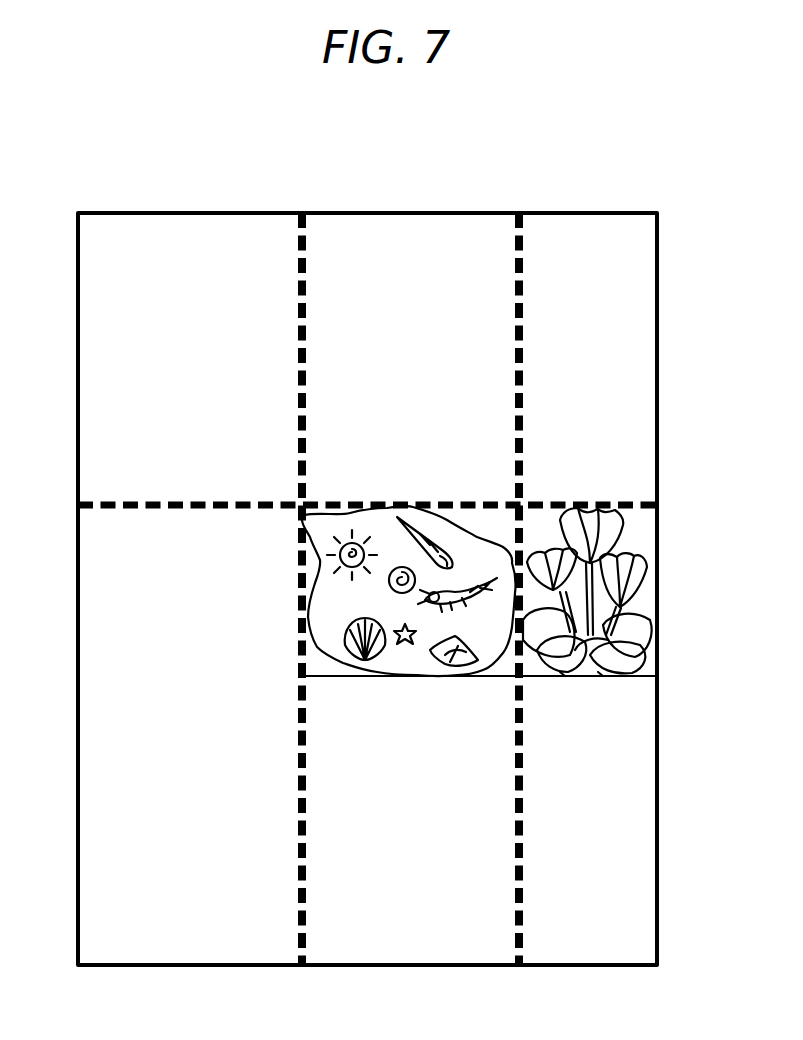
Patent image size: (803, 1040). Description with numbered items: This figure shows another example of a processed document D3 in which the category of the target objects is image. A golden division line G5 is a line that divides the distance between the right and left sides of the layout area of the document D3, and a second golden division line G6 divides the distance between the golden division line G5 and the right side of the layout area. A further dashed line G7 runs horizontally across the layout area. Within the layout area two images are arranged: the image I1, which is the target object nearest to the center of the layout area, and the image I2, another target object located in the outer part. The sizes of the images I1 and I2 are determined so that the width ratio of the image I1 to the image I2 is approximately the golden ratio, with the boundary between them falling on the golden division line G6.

The golden division line G5 is at (299, 240).
The golden division line G6 is at (522, 240).
The horizontal dividing line (grid line) G7 is at (112, 500).
The image I1 is at (383, 677).
The image I2 is at (568, 677).
The document D3 is at (657, 755).